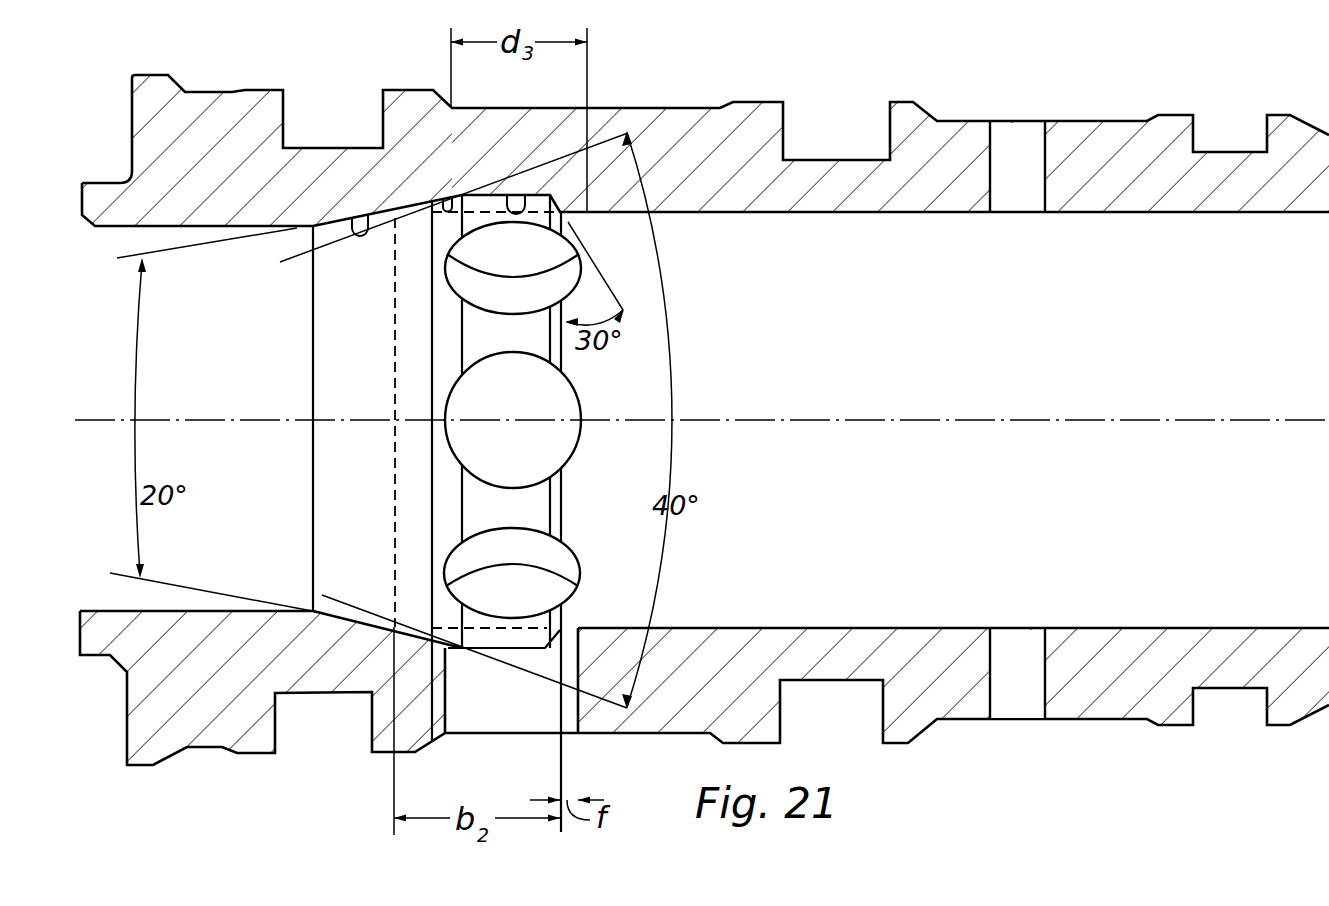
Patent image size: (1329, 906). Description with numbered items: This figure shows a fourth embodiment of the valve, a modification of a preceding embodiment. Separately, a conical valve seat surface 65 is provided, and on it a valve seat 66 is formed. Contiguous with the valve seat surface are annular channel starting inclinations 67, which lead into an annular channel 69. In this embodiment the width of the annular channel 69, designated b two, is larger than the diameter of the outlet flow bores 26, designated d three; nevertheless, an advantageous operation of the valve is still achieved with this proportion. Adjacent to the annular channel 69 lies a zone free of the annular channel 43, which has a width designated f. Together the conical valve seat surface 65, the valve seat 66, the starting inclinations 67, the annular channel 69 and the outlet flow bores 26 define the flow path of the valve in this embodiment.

The outlet flow bores 26 is at (586, 114).
The zone free of the annular channel 43 is at (578, 813).
The conical valve seat surface 65 is at (366, 224).
The valve seat 66 is at (404, 214).
The annular channel starting inclinations 67 is at (455, 208).
The annular channel 69 is at (517, 205).